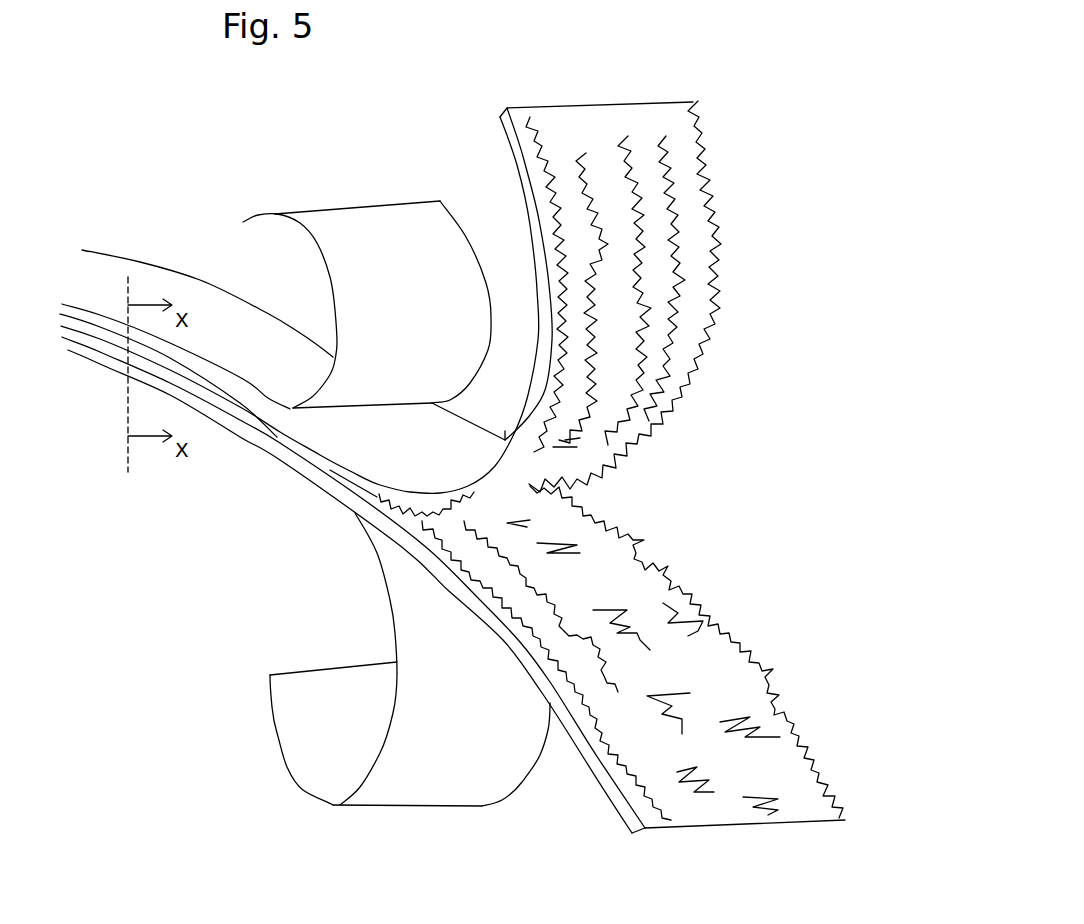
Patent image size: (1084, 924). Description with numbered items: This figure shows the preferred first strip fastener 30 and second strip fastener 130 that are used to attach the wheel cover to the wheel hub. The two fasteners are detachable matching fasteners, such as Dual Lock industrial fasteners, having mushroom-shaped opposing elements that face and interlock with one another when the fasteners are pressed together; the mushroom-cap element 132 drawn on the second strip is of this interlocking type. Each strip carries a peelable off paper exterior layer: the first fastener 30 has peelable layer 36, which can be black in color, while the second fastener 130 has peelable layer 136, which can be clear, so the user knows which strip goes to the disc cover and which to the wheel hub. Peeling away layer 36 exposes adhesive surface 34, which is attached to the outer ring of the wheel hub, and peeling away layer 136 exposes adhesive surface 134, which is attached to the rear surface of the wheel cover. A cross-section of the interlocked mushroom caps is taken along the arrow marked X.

The first strip fastener 30 is at (505, 110).
The adhesive surface 34 is at (472, 442).
The peelable off paper exterior layer 36 is at (347, 222).
The second strip fastener 130 is at (747, 828).
The second fibrous web layer 132 is at (727, 665).
The adhesive surface 134 is at (597, 775).
The peelable off paper exterior layer 136 is at (415, 620).